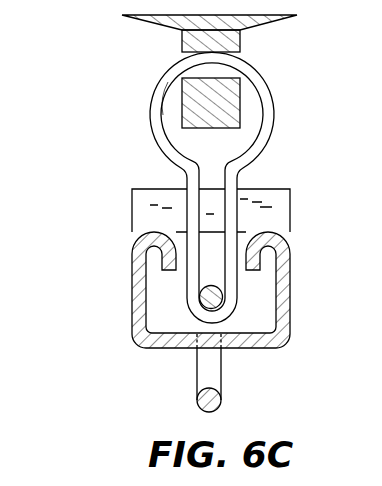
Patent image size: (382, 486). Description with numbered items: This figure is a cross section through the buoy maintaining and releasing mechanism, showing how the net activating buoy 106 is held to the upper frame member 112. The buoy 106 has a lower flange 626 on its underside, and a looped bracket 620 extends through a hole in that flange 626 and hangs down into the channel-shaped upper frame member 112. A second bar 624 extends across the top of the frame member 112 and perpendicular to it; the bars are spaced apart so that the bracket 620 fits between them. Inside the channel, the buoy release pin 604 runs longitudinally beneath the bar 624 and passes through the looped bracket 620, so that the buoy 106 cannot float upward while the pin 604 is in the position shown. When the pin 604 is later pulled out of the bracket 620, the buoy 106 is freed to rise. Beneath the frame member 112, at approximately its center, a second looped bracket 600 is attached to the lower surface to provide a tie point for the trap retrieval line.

The net activating buoy 106 is at (148, 21).
The lower flange 626 is at (241, 38).
The looped bracket 620 is at (150, 108).
The second bar 624 is at (290, 200).
The upper frame member 112 is at (132, 246).
The buoy release pin 604 is at (202, 289).
The looped bracket 600 is at (196, 372).